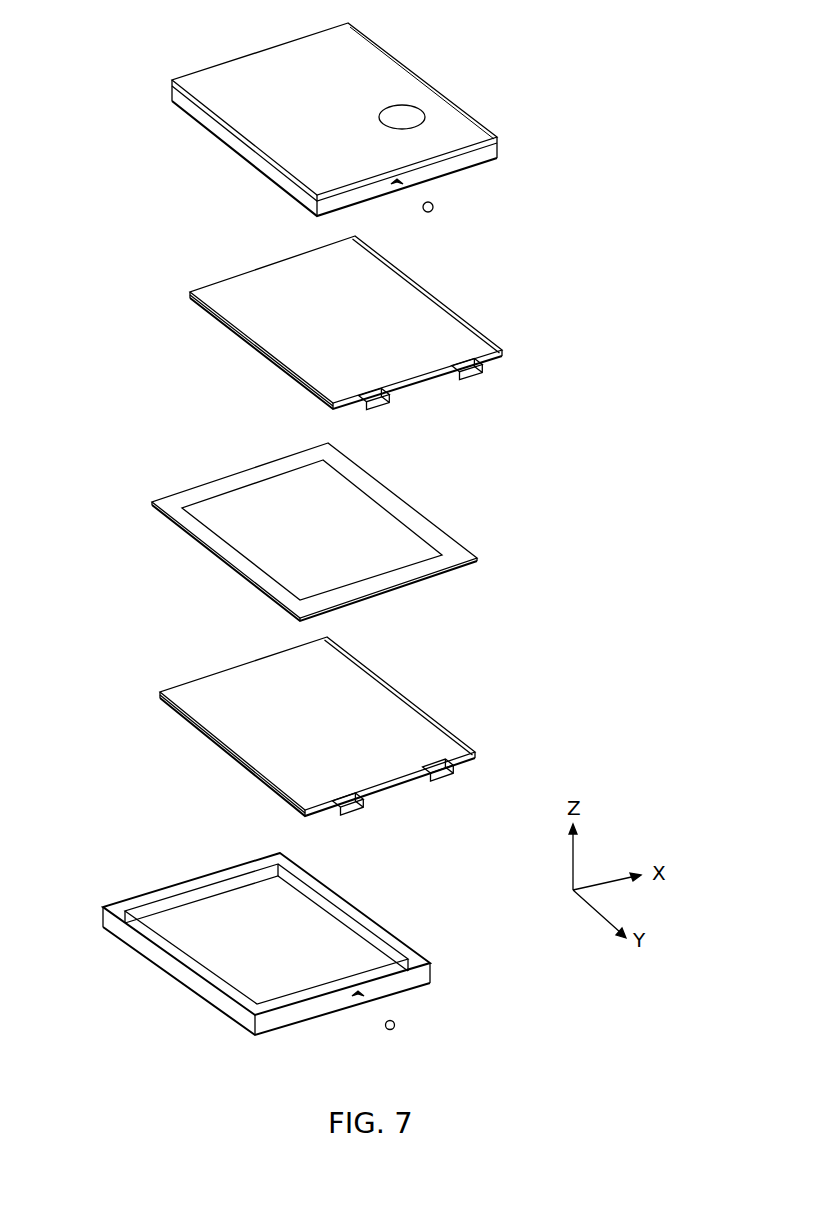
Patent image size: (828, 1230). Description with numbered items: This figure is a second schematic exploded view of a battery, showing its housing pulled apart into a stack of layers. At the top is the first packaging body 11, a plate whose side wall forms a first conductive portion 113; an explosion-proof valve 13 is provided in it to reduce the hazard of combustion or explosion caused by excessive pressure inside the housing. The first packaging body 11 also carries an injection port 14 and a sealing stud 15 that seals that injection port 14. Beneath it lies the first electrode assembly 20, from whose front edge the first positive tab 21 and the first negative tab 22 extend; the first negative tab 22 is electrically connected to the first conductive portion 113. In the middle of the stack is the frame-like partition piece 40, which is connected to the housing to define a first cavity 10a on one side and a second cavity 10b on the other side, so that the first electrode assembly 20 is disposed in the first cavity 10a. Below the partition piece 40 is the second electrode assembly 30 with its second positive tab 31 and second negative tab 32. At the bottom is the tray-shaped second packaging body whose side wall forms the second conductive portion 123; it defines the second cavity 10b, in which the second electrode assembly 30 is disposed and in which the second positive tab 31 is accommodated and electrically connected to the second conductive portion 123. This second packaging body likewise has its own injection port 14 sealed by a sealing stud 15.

The first cavity 10a is at (356, 119).
The second cavity 10b is at (276, 939).
The first packaging body 11 is at (475, 128).
The first conductive portion 113 is at (499, 150).
The explosion-proof valve 13 is at (408, 109).
The injection port 14 is at (404, 183).
The sealing stud 15 is at (434, 207).
The first electrode assembly 20 is at (364, 335).
The first positive tab 21 is at (362, 406).
The first negative tab 22 is at (484, 367).
The partition piece 40 is at (373, 507).
The second electrode assembly 30 is at (338, 744).
The second positive tab 31 is at (352, 812).
The second negative tab 32 is at (441, 776).
The second conductive portion 123 is at (431, 977).